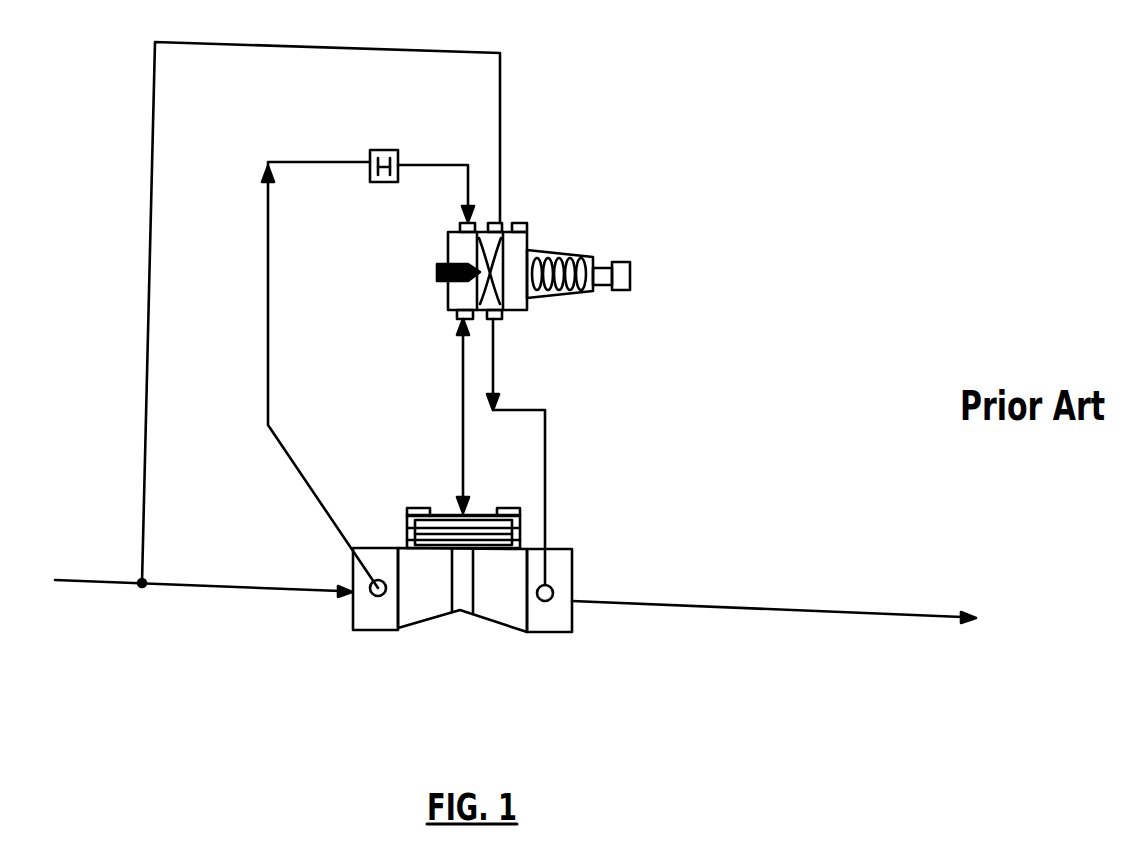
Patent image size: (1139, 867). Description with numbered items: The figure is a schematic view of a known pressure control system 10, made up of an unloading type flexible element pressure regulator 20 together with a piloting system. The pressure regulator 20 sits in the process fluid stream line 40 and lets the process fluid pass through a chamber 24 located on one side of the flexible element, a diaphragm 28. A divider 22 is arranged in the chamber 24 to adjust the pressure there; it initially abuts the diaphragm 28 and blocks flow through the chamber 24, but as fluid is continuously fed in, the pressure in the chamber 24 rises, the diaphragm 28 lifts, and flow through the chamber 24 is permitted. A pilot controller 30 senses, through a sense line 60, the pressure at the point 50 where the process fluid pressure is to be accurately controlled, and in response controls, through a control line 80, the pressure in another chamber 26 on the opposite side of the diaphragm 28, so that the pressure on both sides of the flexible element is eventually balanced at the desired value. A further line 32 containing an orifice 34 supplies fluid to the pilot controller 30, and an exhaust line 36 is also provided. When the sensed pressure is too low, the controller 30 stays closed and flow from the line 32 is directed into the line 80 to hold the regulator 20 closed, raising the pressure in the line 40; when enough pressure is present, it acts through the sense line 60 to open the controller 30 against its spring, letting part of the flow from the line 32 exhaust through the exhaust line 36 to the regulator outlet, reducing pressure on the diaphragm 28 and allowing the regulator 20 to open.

The pressure control system 10 is at (776, 145).
The pressure regulator 20 is at (462, 634).
The divider 22 is at (463, 552).
The chamber 24 is at (515, 496).
The another chamber 26 is at (487, 525).
The diaphragm 28 is at (440, 522).
The pilot controller 30 is at (580, 258).
The line 32 is at (268, 425).
The orifice 34 is at (370, 152).
The exhaust line 36 is at (547, 410).
The process fluid stream line 40 is at (233, 590).
The point 50 is at (142, 588).
The sense line 60 is at (152, 250).
The control line 80 is at (462, 370).